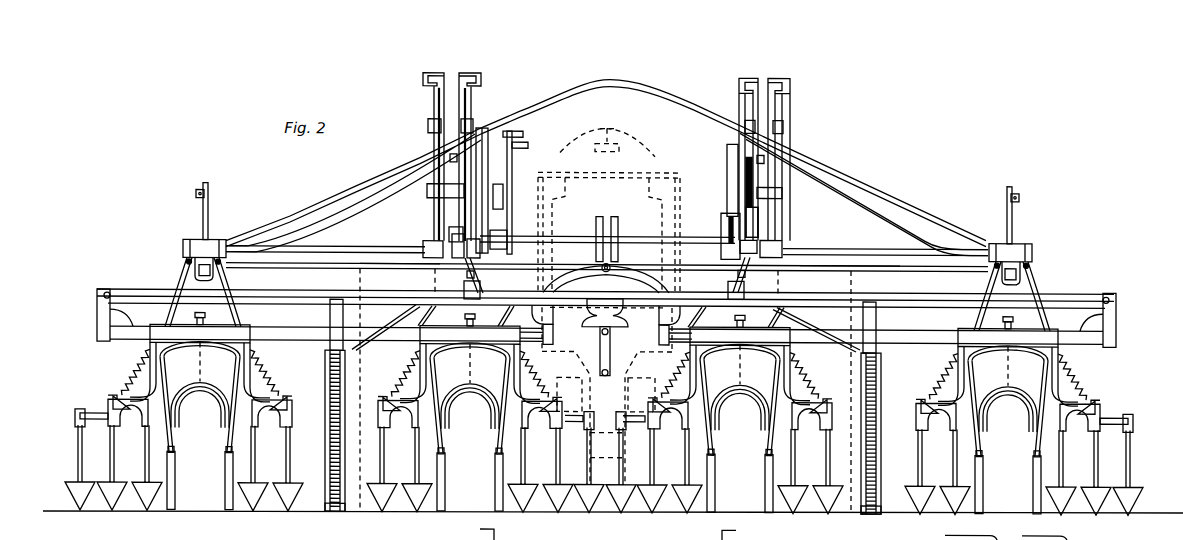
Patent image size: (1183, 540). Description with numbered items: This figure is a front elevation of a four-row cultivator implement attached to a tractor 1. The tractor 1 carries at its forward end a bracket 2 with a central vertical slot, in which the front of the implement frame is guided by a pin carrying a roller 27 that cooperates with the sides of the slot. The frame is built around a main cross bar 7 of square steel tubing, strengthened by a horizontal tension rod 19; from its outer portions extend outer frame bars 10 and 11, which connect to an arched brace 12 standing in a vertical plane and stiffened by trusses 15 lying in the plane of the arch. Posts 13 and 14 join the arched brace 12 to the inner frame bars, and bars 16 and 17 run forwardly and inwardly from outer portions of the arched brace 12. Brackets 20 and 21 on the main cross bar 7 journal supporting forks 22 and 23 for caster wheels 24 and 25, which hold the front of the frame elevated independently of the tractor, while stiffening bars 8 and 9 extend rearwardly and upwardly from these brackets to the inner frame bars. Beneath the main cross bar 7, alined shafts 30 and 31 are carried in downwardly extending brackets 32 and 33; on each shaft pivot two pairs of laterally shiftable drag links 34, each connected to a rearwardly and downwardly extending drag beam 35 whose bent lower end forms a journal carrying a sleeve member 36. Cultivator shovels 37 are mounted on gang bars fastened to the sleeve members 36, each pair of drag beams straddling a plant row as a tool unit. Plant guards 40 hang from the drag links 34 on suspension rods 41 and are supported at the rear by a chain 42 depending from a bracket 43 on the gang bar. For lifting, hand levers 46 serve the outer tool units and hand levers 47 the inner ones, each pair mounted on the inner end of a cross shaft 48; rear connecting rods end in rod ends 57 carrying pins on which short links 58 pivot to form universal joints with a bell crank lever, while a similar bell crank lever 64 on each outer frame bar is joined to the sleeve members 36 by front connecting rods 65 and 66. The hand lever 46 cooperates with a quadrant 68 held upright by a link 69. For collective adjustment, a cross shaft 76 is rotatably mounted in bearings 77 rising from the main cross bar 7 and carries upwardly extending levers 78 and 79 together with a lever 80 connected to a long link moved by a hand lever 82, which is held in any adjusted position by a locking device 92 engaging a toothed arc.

The tractor 1 is at (672, 205).
The bracket 2 is at (596, 260).
The main cross bar 7 is at (1068, 296).
The stiffening bar 8 is at (826, 323).
The stiffening bar 9 is at (388, 322).
The outer frame bar 10 is at (1032, 274).
The outer frame bar 11 is at (227, 283).
The arched brace 12 is at (640, 84).
The post 13 is at (727, 170).
The post 14 is at (484, 178).
The truss 15 is at (318, 200).
The forwardly and inwardly extending bar 16 is at (888, 269).
The forwardly and inwardly extending bar 17 is at (312, 270).
The tension rod 19 is at (395, 270).
The bracket 20 is at (878, 327).
The bracket 21 is at (331, 320).
The supporting fork 22 is at (884, 369).
The supporting fork 23 is at (326, 366).
The caster wheel 24 is at (874, 510).
The caster wheel 25 is at (337, 512).
The roller 27 is at (622, 270).
The shaft 30 is at (1090, 341).
The shaft 31 is at (130, 339).
The bracket 32 is at (606, 325).
The bracket 33 is at (97, 318).
The drag link 34 is at (200, 342).
The drag beam 35 is at (200, 403).
The sleeve member 36 is at (199, 398).
The cultivator shovel 37 is at (184, 471).
The plant guard 40 is at (200, 477).
The suspension rod 41 is at (200, 432).
The chain 42 is at (200, 385).
The bracket 43 is at (200, 351).
The hand lever 46 is at (437, 77).
The hand lever 47 is at (468, 77).
The cross shaft 48 is at (372, 246).
The rod end 57 is at (182, 273).
The link 58 is at (183, 252).
The bell crank lever 64 is at (209, 236).
The front connecting rod 65 is at (172, 310).
The front connecting rod 66 is at (242, 316).
The quadrant 68 is at (428, 133).
The link 69 is at (428, 190).
The cross shaft 76 is at (647, 235).
The bearing 77 is at (732, 257).
The lever 78 is at (758, 222).
The lever 79 is at (449, 232).
The lever 80 is at (503, 218).
The hand lever 82 is at (523, 133).
The locking device 92 is at (520, 146).